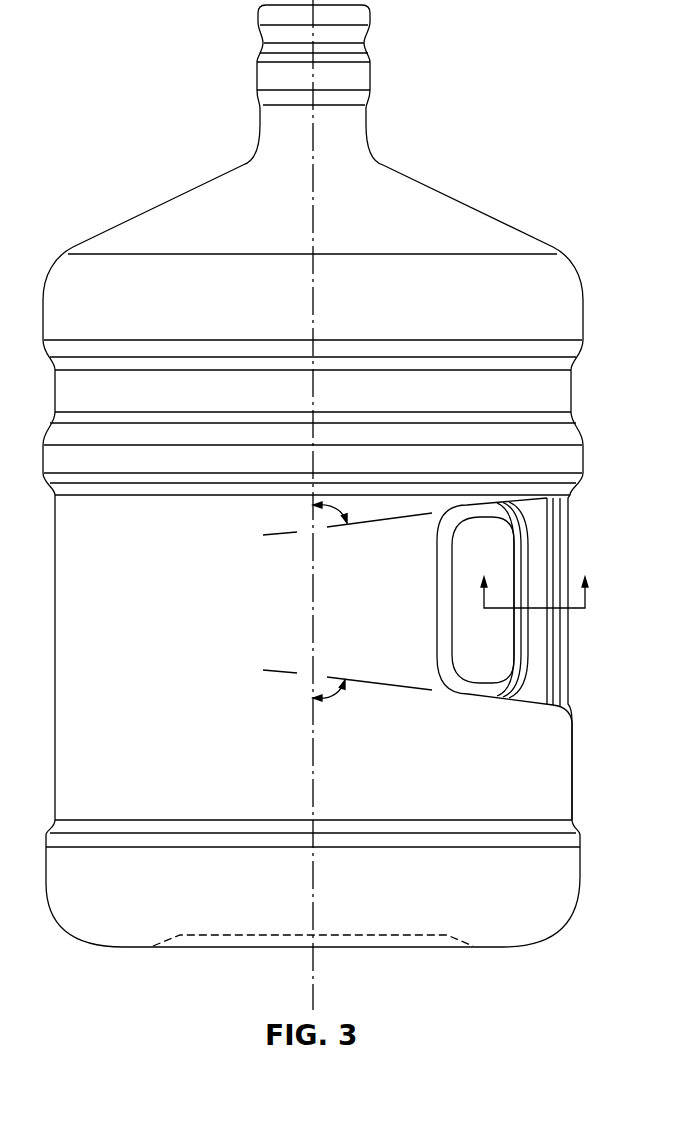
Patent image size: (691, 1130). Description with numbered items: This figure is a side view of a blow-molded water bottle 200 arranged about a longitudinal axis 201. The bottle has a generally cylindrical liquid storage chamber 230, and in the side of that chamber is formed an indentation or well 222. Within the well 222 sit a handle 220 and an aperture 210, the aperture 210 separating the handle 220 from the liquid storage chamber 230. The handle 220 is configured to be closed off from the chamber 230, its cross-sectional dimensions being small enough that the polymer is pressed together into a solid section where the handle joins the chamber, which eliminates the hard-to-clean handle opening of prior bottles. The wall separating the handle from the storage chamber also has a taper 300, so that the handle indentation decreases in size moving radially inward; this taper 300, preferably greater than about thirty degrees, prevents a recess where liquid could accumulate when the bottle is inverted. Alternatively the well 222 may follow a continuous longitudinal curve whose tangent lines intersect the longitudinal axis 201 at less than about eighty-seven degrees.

The water bottle 200 is at (367, 476).
The longitudinal axis 201 is at (314, 978).
The aperture 210 is at (493, 645).
The handle 220 is at (538, 522).
The well 222 is at (596, 559).
The liquid storage chamber 230 is at (537, 776).
The taper 300 is at (330, 523).